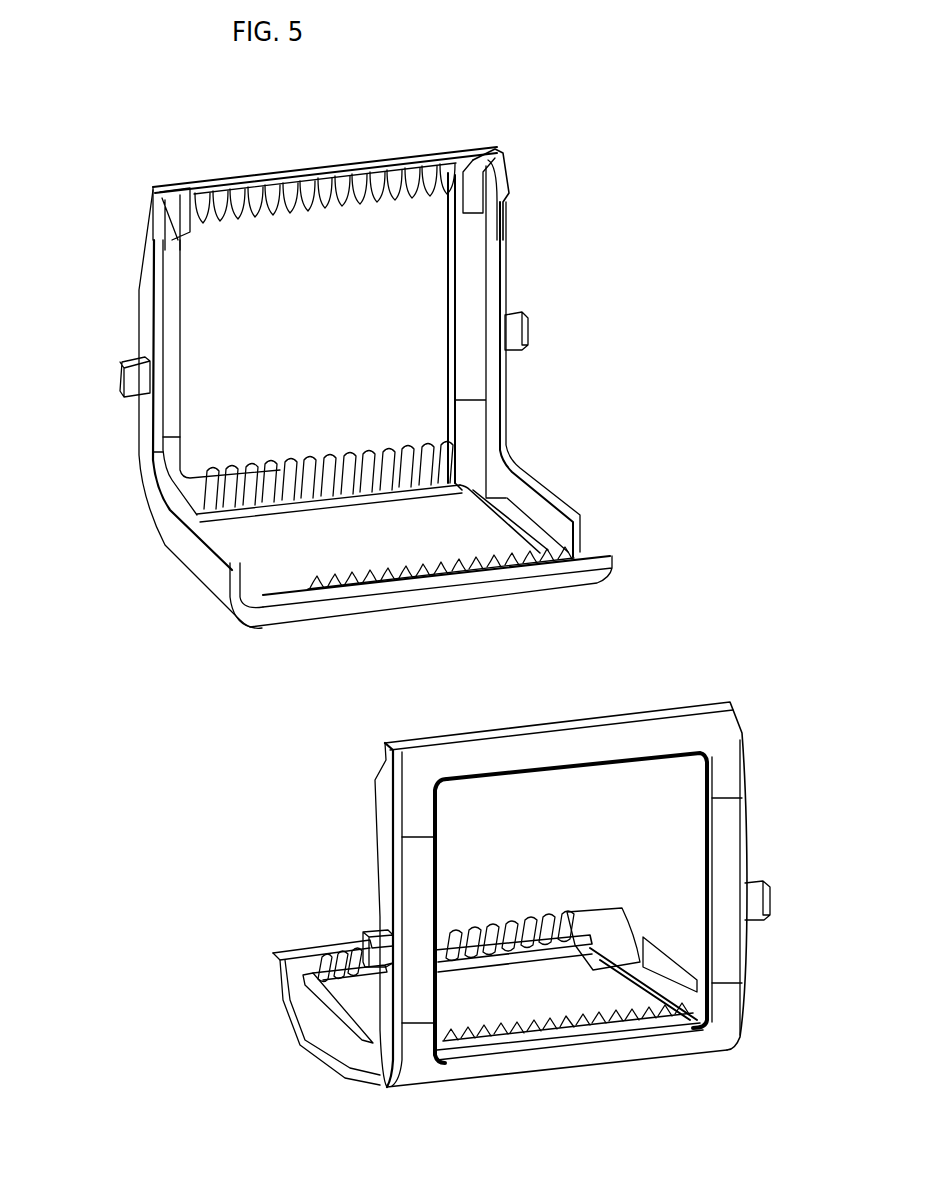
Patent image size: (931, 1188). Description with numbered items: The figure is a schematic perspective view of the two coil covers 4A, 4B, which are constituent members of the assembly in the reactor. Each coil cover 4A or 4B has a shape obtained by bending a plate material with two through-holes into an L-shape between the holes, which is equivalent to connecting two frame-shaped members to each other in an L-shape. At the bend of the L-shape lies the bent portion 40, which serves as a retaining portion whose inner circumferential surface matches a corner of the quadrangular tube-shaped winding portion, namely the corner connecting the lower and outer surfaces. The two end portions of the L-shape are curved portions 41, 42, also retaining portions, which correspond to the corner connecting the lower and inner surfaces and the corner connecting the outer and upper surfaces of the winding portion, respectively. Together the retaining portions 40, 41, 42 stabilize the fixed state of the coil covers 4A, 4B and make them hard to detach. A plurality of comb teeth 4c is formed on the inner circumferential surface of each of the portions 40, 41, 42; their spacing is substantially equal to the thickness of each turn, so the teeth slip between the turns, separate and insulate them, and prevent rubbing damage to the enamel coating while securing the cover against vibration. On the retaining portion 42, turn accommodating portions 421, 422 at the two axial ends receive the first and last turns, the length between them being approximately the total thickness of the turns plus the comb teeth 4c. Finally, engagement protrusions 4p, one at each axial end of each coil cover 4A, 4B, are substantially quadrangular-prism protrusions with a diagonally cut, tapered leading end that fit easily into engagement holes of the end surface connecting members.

The coil cover 4A is at (223, 146).
The coil cover 4B is at (698, 1079).
The bent portion (retaining portion) 40 is at (312, 460).
The curved portion (retaining portion) 41 is at (333, 612).
The curved portion (retaining portion) 42 is at (340, 172).
The turn accommodating portion 421 is at (178, 185).
The turn accommodating portion 422 is at (498, 145).
The comb teeth 4c is at (343, 206).
The engagement protrusion 4p is at (528, 330).